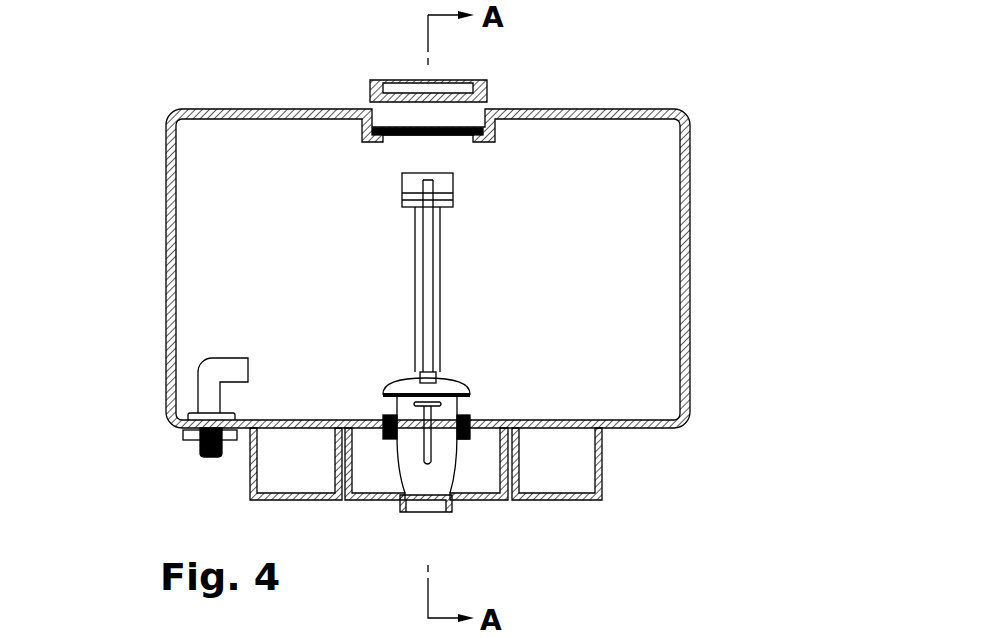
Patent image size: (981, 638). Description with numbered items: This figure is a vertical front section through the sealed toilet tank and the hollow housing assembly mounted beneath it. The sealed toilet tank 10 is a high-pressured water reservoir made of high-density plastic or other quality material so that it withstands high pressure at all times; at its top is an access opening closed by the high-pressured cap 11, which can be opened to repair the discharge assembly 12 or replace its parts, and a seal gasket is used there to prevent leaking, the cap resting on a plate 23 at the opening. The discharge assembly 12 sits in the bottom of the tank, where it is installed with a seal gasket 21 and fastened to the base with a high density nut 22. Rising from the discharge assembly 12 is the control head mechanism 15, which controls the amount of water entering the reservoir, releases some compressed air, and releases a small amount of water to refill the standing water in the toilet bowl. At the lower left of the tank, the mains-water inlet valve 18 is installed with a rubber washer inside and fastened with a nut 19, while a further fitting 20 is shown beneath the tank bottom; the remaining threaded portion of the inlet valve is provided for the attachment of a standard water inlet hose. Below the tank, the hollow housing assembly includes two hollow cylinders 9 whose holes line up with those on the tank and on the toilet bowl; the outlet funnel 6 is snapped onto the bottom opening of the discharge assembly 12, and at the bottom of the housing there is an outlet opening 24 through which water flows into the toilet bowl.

The sealed toilet tank 10 is at (167, 228).
The high-pressured cap 11 is at (410, 85).
The plate 23 is at (452, 133).
The control head mechanism 15 is at (405, 183).
The mains-water inlet valve 18 is at (232, 363).
The discharge assembly 12 is at (385, 412).
The seal gasket 21 is at (470, 415).
The outlet funnel 6 is at (453, 478).
The outlet opening 24 is at (458, 500).
The high density nut 22 is at (468, 437).
The hollow cylinders 9 is at (340, 500).
The nut 19 is at (185, 437).
The nut 20 is at (200, 455).